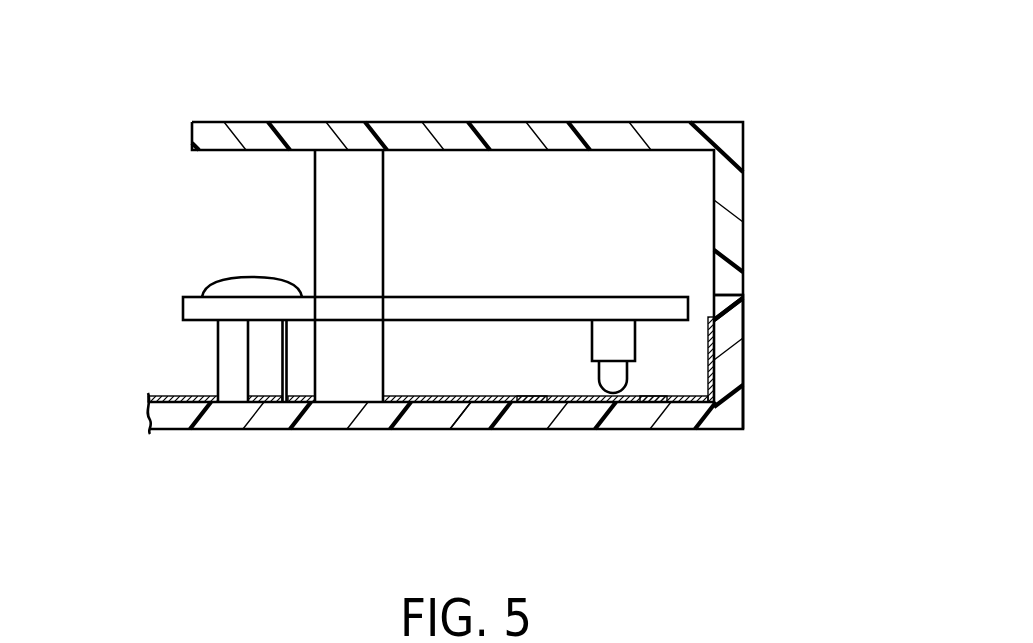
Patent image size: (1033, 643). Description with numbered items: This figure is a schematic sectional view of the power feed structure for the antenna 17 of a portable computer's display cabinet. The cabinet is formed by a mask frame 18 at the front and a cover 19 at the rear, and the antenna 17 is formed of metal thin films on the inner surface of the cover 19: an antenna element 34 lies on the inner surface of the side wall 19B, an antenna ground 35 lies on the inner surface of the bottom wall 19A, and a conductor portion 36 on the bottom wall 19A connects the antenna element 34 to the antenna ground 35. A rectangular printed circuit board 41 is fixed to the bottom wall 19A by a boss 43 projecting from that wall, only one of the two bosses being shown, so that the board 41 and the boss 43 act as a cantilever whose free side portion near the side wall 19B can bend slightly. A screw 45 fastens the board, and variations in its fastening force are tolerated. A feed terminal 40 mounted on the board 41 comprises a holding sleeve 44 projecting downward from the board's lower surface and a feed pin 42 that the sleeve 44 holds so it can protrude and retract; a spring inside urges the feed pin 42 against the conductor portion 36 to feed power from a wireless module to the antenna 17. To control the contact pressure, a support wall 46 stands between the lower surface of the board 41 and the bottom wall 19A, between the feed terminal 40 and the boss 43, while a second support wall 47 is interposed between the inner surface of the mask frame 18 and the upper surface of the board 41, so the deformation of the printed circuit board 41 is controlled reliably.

The antenna 17 is at (517, 398).
The mask frame 18 is at (537, 140).
The cover 19 is at (743, 426).
The bottom wall 19A is at (447, 420).
The side wall 19B is at (733, 322).
The antenna element 34 is at (708, 337).
The antenna ground 35 is at (173, 397).
The conductor portion 36 is at (640, 398).
The feed terminal 40 is at (463, 237).
The printed circuit board 41 is at (405, 297).
The feed pin 42 is at (600, 380).
The boss 43 is at (252, 390).
The holding sleeve 44 is at (607, 343).
The screw 45 is at (235, 277).
The support wall 46 is at (337, 390).
The support wall 47 is at (348, 162).